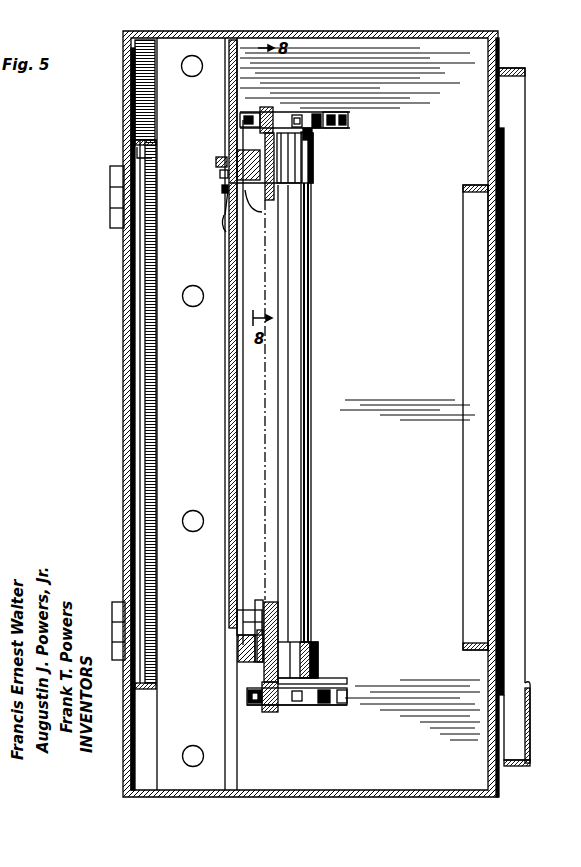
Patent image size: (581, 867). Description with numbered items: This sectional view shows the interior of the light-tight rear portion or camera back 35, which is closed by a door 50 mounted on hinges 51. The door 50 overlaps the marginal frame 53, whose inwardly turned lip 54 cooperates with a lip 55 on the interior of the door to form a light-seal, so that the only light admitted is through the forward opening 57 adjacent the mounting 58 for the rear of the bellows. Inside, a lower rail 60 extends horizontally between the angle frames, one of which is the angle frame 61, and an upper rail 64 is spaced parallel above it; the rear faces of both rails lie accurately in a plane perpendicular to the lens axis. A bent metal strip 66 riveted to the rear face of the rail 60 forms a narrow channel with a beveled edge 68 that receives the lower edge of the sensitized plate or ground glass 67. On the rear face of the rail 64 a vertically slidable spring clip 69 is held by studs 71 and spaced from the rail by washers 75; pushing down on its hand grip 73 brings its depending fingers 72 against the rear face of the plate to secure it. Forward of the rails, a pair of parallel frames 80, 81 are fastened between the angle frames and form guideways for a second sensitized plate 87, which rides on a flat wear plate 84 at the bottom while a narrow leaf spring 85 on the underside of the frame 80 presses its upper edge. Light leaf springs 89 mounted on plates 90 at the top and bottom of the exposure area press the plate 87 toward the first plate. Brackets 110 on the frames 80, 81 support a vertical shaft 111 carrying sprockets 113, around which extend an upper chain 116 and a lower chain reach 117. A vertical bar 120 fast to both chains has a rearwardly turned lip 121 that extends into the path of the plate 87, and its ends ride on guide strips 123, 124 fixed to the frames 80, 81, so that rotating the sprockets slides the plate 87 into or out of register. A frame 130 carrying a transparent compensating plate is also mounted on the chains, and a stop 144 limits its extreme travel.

The camera back 35 is at (499, 58).
The door 50 is at (124, 340).
The hinges 51 is at (110, 186).
The marginal frame 53 is at (140, 126).
The inwardly turned lip 54 is at (154, 143).
The lip 55 is at (153, 158).
The forward opening 57 is at (490, 278).
The mounting 58 is at (512, 130).
The rail 60 is at (240, 648).
The angle frame 61 is at (216, 87).
The upper rail 64 is at (238, 154).
The bent metal strip 66 is at (237, 612).
The sensitized plate or ground glass 67 is at (229, 577).
The beveled edge 68 is at (237, 625).
The spring clip 69 is at (222, 190).
The studs 71 is at (222, 173).
The depending fingers 72 is at (224, 222).
The hand grip 73 is at (216, 161).
The washers 75 is at (226, 200).
The frame 80 is at (278, 158).
The frame 81 is at (280, 640).
The wear plate 84 is at (263, 625).
The leaf spring 85 is at (280, 222).
The second sensitized plate 87 is at (300, 247).
The leaf springs 89 is at (265, 205).
The plates 90 is at (285, 176).
The brackets 110 is at (312, 143).
The vertical shaft 111 is at (307, 430).
The sprockets 113 is at (337, 112).
The chain 116 is at (322, 118).
The chain reach 117 is at (350, 693).
The bar 120 is at (274, 277).
The rearwardly turned lip 121 is at (262, 134).
The guide strip 123 is at (294, 114).
The guide strip 124 is at (318, 673).
The frame 130 is at (300, 650).
The stop 144 is at (318, 665).